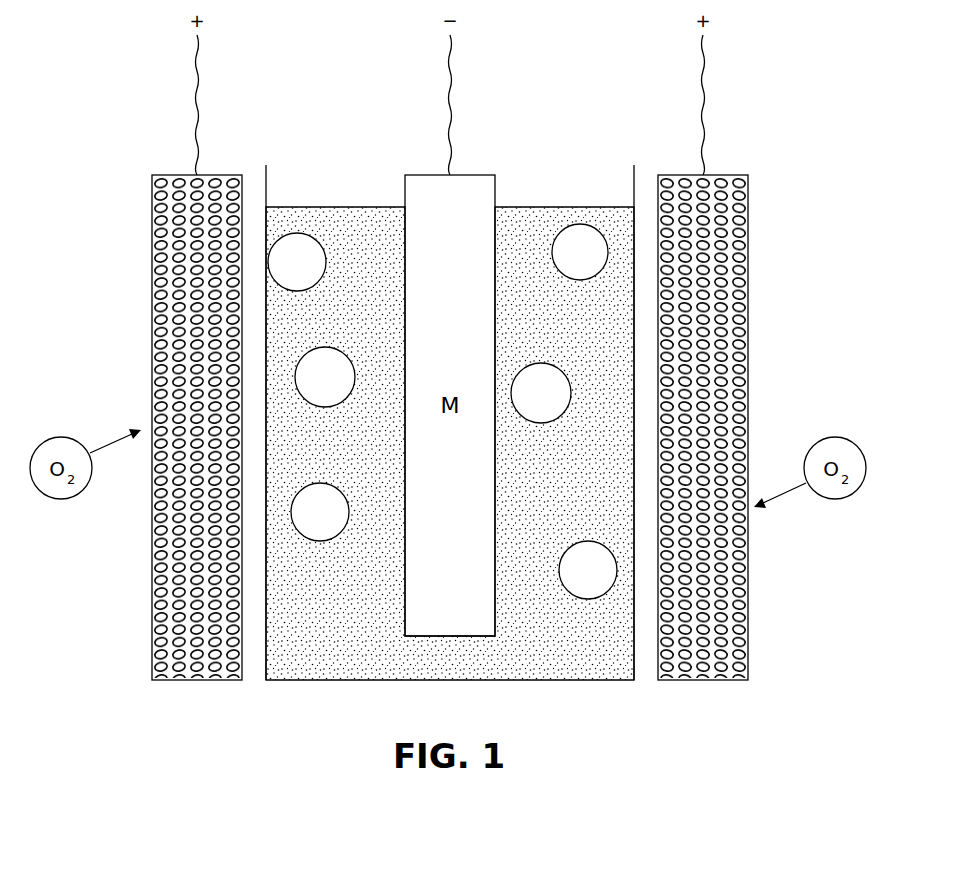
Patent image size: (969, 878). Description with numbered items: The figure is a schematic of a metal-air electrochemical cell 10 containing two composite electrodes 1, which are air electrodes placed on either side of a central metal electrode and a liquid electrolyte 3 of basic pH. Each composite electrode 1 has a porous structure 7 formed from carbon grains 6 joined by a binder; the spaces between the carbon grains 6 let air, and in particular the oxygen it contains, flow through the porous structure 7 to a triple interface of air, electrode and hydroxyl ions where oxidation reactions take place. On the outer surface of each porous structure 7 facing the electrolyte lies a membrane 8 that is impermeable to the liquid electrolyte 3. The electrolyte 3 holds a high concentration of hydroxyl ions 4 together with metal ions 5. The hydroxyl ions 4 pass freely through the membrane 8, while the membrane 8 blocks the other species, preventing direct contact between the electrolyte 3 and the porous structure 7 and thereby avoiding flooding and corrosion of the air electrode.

The composite electrode 1 is at (280, 180).
The liquid electrolyte 3 is at (600, 655).
The hydroxyl ions 4 is at (585, 600).
The metal ions 5 is at (335, 348).
The carbon grains 6 is at (162, 296).
The porous structure 7 is at (155, 226).
The membrane 8 is at (255, 668).
The metal-air electrochemical cell 10 is at (790, 374).